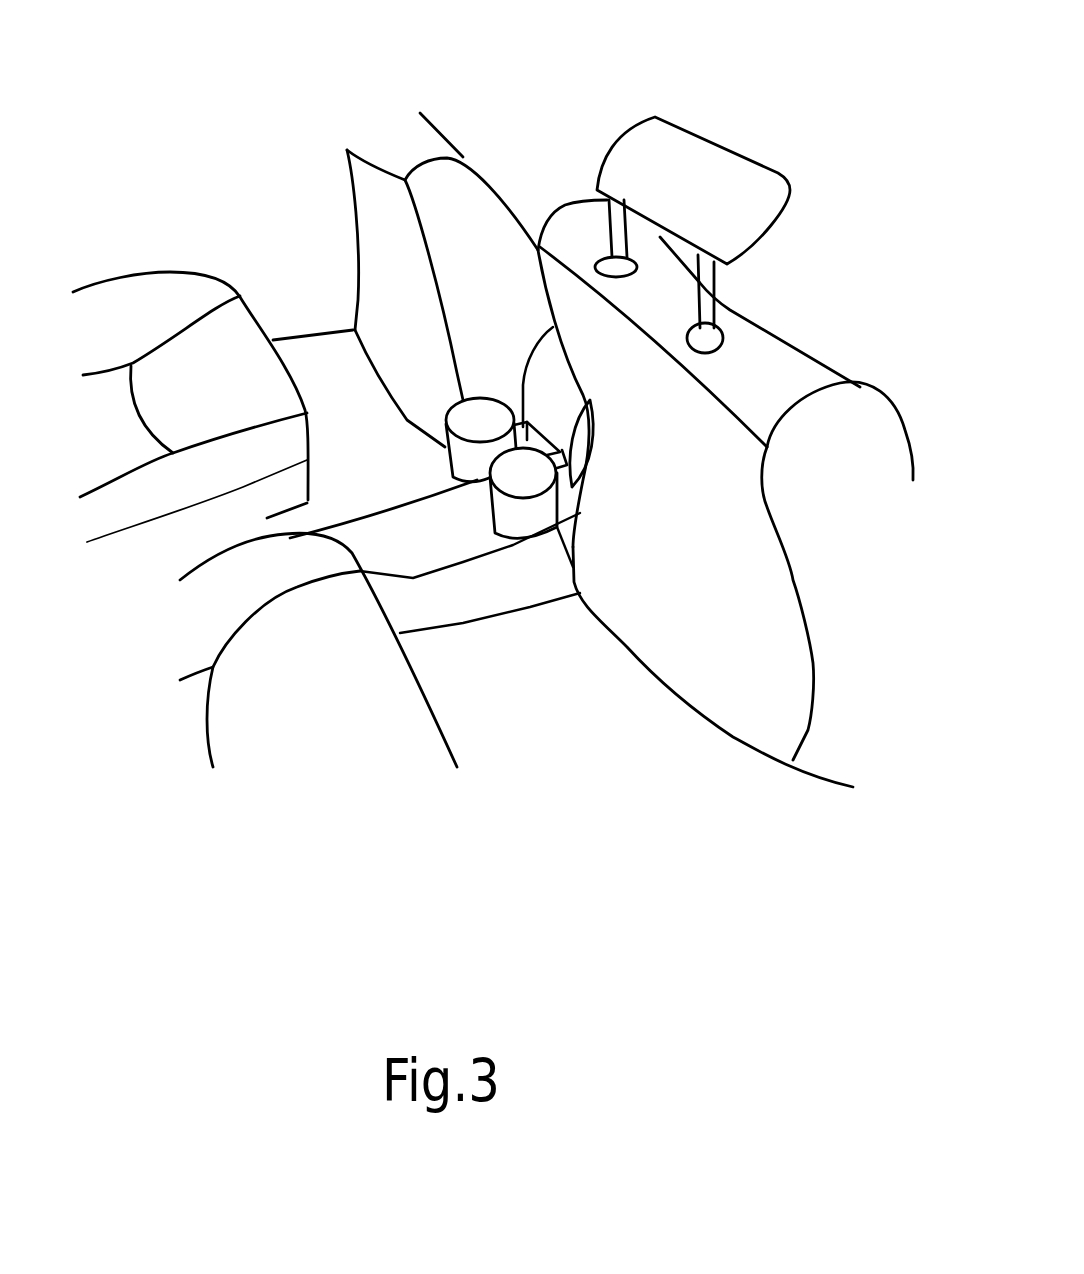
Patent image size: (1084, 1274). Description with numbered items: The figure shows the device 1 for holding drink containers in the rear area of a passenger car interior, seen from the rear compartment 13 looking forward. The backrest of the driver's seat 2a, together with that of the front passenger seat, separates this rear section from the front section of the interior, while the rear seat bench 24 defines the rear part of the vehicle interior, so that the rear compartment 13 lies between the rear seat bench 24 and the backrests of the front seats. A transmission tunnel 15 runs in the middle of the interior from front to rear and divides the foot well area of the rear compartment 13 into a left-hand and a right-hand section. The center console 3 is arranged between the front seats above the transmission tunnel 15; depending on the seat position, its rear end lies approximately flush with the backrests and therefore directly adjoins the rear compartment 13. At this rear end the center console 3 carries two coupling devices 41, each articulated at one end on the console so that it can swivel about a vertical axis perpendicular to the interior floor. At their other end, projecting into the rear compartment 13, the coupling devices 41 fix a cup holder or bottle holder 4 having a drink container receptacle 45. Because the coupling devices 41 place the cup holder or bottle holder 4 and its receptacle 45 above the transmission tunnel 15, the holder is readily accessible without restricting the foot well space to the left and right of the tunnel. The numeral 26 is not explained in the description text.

The device for holding drink containers 1 is at (200, 108).
The driver's seat 2a is at (448, 177).
The rear seat bench 24 is at (180, 352).
The transmission tunnel 15 is at (400, 527).
The center console 3 is at (519, 465).
The coupling devices 41 is at (550, 427).
The cup holder or bottle holder 4 is at (481, 470).
The drink container receptacle 45 is at (542, 520).
The rear compartment 13 is at (580, 750).
The seat backrest of adjacent seat 26 is at (865, 420).